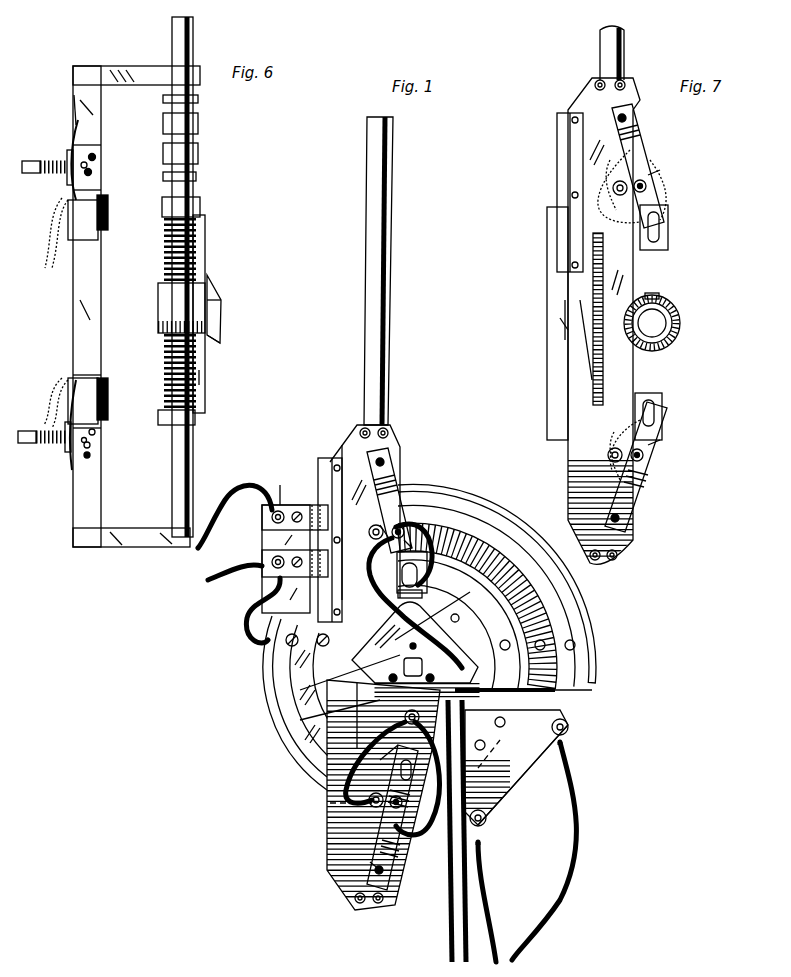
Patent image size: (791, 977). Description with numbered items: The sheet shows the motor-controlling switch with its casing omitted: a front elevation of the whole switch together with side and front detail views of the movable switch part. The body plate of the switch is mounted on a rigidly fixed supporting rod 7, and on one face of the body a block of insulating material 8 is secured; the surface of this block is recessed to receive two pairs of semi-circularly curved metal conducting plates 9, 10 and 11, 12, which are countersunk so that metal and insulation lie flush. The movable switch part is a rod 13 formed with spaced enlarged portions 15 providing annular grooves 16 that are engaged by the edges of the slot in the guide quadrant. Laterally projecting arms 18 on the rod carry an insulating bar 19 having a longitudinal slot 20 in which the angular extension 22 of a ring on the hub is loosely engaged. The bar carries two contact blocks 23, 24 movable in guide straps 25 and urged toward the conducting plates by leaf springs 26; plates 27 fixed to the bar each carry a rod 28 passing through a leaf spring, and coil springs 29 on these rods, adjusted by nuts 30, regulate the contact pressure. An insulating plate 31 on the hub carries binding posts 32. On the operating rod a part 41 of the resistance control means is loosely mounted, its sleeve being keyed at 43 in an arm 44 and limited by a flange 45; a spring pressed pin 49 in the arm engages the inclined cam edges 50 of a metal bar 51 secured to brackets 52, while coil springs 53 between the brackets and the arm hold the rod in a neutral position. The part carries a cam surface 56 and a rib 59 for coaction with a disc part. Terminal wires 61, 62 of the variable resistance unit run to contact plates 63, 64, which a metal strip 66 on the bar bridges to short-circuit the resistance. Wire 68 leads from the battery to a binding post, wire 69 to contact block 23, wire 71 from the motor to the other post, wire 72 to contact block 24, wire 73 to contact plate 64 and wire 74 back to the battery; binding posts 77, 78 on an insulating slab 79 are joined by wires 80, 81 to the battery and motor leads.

In FIG. 1, the supporting rod 7 is at (300, 690).
In FIG. 1, the insulating block 8 is at (357, 647).
In FIG. 1, the conducting plate 9 is at (360, 712).
In FIG. 1, the conducting plate 10 is at (555, 628).
In FIG. 1, the conducting plate 11 is at (500, 672).
In FIG. 1, the conducting plate 12 is at (330, 760).
In FIG. 6, the rod 13 is at (172, 42).
In FIG. 1, the rod 13 is at (368, 170).
In FIG. 7, the rod 13 is at (600, 58).
In FIG. 6, the enlarged portions 15 is at (198, 126).
In FIG. 6, the annular grooves 16 is at (199, 132).
In FIG. 6, the arms 18 is at (110, 66).
In FIG. 6, the insulating bar 19 is at (76, 104).
In FIG. 1, the insulating bar 19 is at (392, 460).
In FIG. 7, the insulating bar 19 is at (590, 100).
In FIG. 1, the slot 20 is at (290, 645).
In FIG. 7, the slot 20 is at (592, 372).
In FIG. 1, the angular extension 22 is at (300, 720).
In FIG. 6, the contact block 23 is at (117, 301).
In FIG. 1, the contact block 23 is at (422, 560).
In FIG. 7, the contact block 23 is at (665, 245).
In FIG. 6, the contact block 24 is at (88, 440).
In FIG. 1, the contact block 24 is at (368, 803).
In FIG. 7, the contact block 24 is at (660, 400).
In FIG. 6, the guide straps 25 is at (76, 236).
In FIG. 1, the guide straps 25 is at (414, 556).
In FIG. 7, the guide straps 25 is at (668, 230).
In FIG. 6, the leaf springs 26 is at (76, 140).
In FIG. 1, the leaf springs 26 is at (392, 526).
In FIG. 7, the leaf springs 26 is at (655, 145).
In FIG. 6, the plates 27 is at (96, 157).
In FIG. 1, the plates 27 is at (390, 512).
In FIG. 7, the plates 27 is at (645, 198).
In FIG. 6, the rod 28 is at (86, 162).
In FIG. 1, the rod 28 is at (403, 528).
In FIG. 7, the rod 28 is at (648, 187).
In FIG. 6, the coil springs 29 is at (92, 173).
In FIG. 1, the coil springs 29 is at (408, 538).
In FIG. 7, the coil springs 29 is at (705, 168).
In FIG. 6, the nuts 30 is at (74, 152).
In FIG. 1, the nuts 30 is at (400, 540).
In FIG. 7, the nuts 30 is at (650, 183).
In FIG. 1, the plate of insulation 31 is at (415, 628).
In FIG. 1, the binding posts 32 is at (372, 730).
In FIG. 6, the part of resistance control means 41 is at (221, 302).
In FIG. 7, the part of resistance control means 41 is at (678, 338).
In FIG. 7, the key 43 is at (660, 296).
In FIG. 6, the arm 44 is at (158, 308).
In FIG. 7, the arm 44 is at (672, 323).
In FIG. 7, the flange 45 is at (666, 316).
In FIG. 7, the spring pressed pin 49 is at (560, 318).
In FIG. 6, the cam edges 50 is at (205, 262).
In FIG. 7, the cam edges 50 is at (560, 310).
In FIG. 6, the metal bar 51 is at (205, 386).
In FIG. 7, the metal bar 51 is at (555, 340).
In FIG. 6, the brackets 52 is at (200, 212).
In FIG. 7, the brackets 52 is at (552, 222).
In FIG. 6, the coil springs 53 is at (164, 260).
In FIG. 6, the cam surface 56 is at (221, 338).
In FIG. 6, the rib 59 is at (221, 310).
In FIG. 1, the terminal wire 61 is at (278, 505).
In FIG. 1, the terminal wire 62 is at (248, 615).
In FIG. 1, the contact plate 63 is at (298, 505).
In FIG. 1, the contact plate 64 is at (262, 568).
In FIG. 6, the metal strip 66 is at (60, 198).
In FIG. 1, the metal strip 66 is at (324, 458).
In FIG. 7, the metal strip 66 is at (557, 165).
In FIG. 1, the wire 68 is at (452, 908).
In FIG. 1, the wire 69 is at (460, 616).
In FIG. 1, the wire 71 is at (465, 938).
In FIG. 1, the wire 72 is at (378, 760).
In FIG. 1, the wire 73 is at (208, 578).
In FIG. 1, the wire 74 is at (215, 525).
In FIG. 1, the binding post 77 is at (569, 728).
In FIG. 1, the binding post 78 is at (488, 826).
In FIG. 1, the slab of insulation 79 is at (512, 788).
In FIG. 1, the wire 80 is at (575, 862).
In FIG. 1, the wire 81 is at (486, 870).